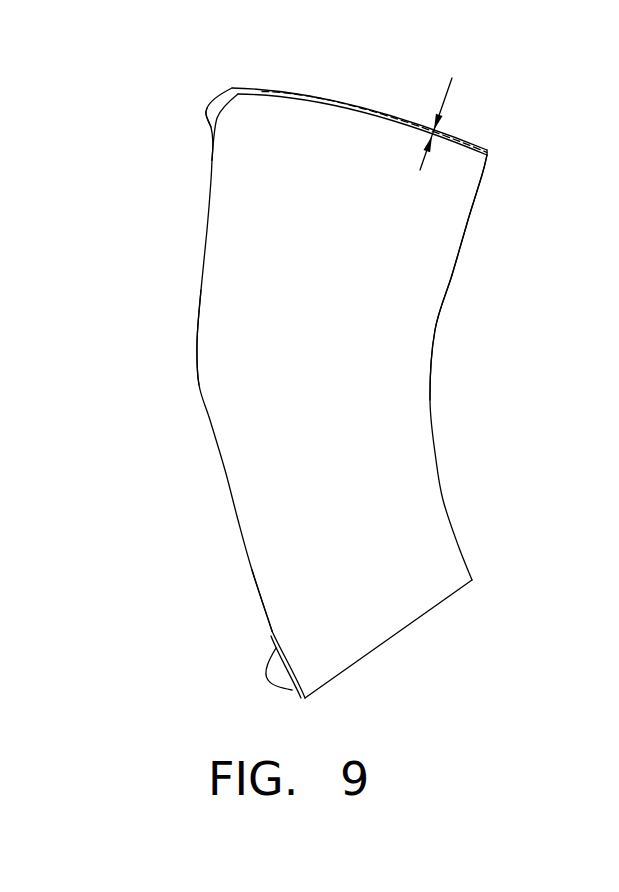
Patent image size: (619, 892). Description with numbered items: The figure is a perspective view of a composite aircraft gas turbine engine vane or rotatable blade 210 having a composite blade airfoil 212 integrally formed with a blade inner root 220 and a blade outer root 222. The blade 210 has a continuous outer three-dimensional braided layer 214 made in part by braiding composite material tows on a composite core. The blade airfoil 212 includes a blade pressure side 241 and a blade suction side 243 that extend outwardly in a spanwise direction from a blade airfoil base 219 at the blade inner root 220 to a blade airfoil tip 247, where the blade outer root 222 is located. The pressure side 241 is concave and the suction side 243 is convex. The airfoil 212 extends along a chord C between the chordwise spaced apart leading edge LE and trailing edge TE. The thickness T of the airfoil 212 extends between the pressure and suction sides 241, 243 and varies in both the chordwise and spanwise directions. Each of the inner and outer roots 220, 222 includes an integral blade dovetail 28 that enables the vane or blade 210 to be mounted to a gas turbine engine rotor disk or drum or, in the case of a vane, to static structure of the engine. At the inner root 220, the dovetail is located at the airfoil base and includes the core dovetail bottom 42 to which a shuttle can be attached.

The vane or rotatable blade 210 is at (471, 308).
The blade airfoil 212 is at (272, 450).
The outer three-dimensional braided layer 214 is at (468, 217).
The blade airfoil base 219 is at (272, 631).
The blade inner root 220 is at (282, 682).
The blade outer root 222 is at (217, 90).
The blade pressure side 241 is at (387, 503).
The blade suction side 243 is at (328, 102).
The blade airfoil tip 247 is at (458, 155).
The blade dovetail 28 is at (212, 125).
The core dovetail bottom 42 is at (357, 663).
The leading edge LE is at (197, 343).
The trailing edge TE is at (435, 332).
The thickness T is at (447, 93).
The chord C is at (308, 105).